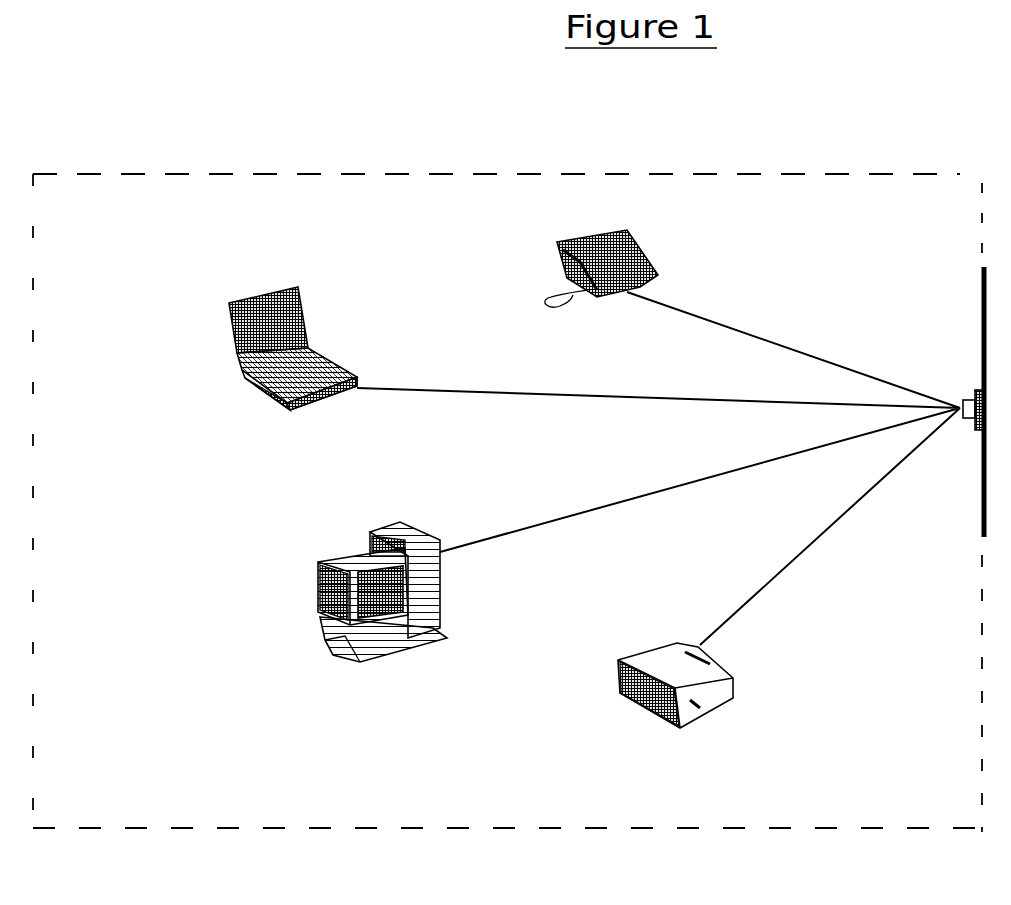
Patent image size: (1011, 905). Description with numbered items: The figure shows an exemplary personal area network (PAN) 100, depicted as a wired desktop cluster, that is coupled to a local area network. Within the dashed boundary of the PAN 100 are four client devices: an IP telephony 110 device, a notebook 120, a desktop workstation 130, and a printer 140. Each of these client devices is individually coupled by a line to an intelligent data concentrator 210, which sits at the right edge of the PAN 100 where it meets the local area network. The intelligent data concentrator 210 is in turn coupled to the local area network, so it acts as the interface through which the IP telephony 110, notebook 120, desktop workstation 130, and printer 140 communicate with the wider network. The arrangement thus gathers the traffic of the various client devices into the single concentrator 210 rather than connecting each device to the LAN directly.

The personal area network 100 is at (192, 167).
The IP telephony 110 is at (494, 281).
The notebook 120 is at (142, 388).
The desktop workstation 130 is at (107, 695).
The printer 140 is at (578, 762).
The intelligent data concentrator 210 is at (957, 373).